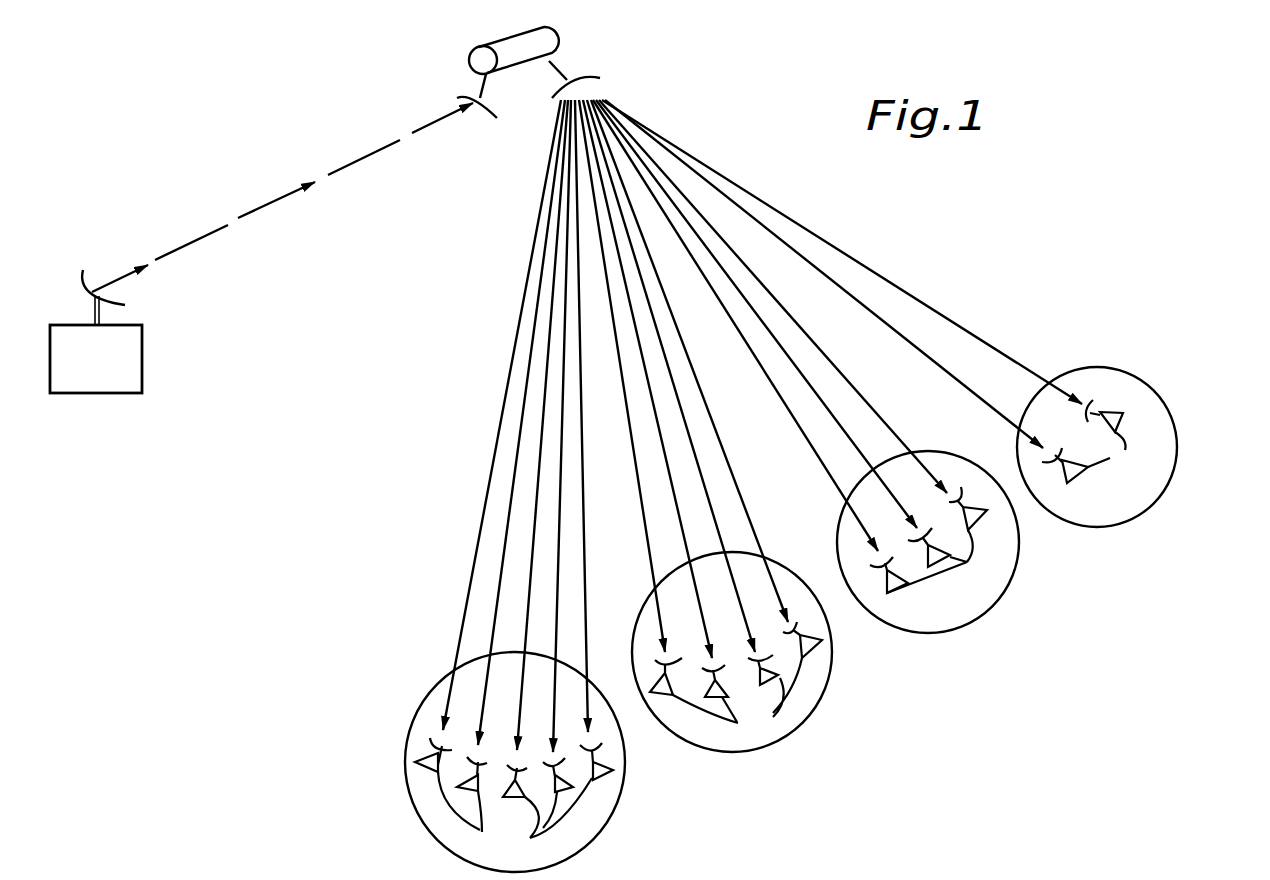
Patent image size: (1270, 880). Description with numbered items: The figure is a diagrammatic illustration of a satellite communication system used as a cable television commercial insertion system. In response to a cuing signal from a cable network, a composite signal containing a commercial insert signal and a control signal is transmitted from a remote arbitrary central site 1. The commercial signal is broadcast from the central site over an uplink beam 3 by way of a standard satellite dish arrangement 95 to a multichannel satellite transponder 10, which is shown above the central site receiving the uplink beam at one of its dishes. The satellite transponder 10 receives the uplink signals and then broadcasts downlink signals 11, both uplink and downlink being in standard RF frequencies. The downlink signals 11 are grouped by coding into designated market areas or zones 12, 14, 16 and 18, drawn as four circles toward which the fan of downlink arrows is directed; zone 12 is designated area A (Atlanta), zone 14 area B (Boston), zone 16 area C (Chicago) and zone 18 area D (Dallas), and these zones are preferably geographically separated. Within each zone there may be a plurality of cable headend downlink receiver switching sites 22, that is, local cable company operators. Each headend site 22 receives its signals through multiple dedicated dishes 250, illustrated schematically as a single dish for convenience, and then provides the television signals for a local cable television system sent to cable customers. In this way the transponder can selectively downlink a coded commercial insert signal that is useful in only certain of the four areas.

The remote arbitrary central site 1 is at (142, 342).
The standard satellite dish arrangement 95 is at (82, 280).
The uplink beam 3 is at (278, 200).
The multichannel satellite transponder 10 is at (508, 43).
The downlink signals 11 is at (563, 100).
The zone A 12 is at (613, 820).
The zone B 14 is at (817, 705).
The zone C 16 is at (1012, 580).
The zone D 18 is at (1178, 458).
The dedicated dishes 250 is at (592, 745).
The cable headend downlink receiver switching site 22 is at (788, 640).